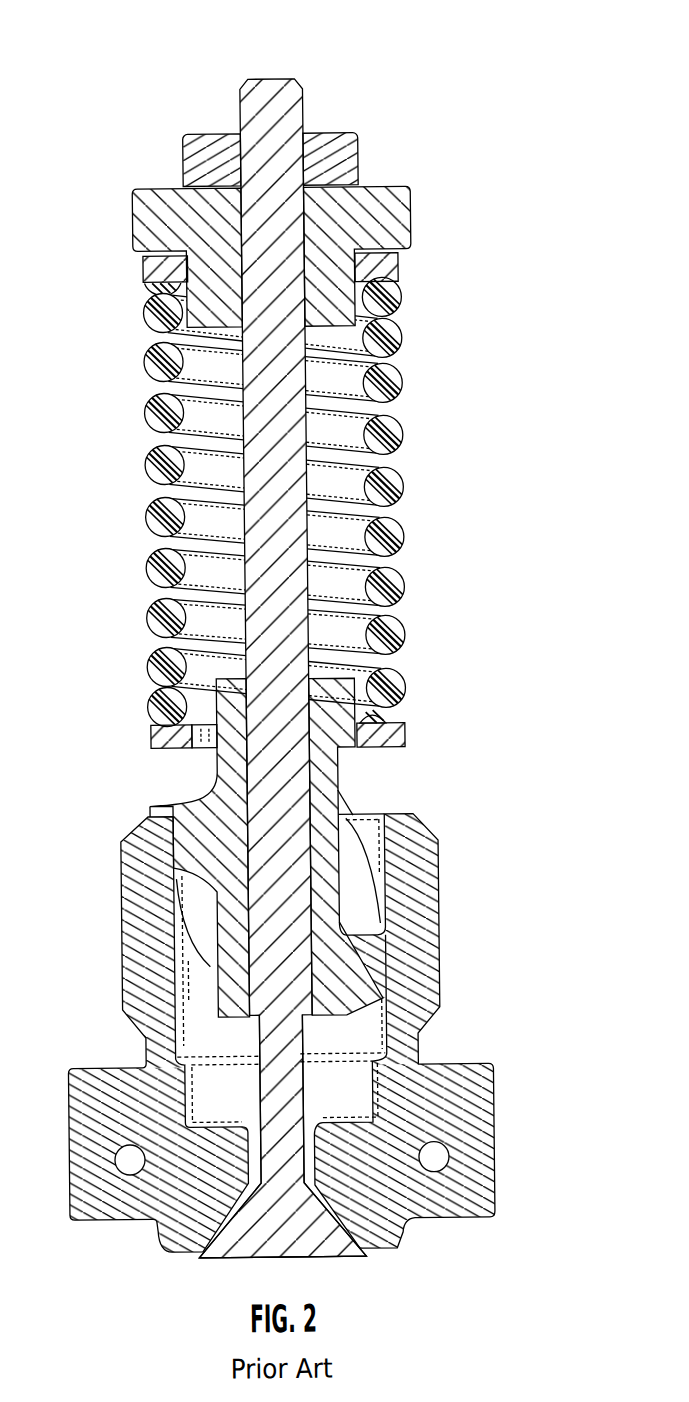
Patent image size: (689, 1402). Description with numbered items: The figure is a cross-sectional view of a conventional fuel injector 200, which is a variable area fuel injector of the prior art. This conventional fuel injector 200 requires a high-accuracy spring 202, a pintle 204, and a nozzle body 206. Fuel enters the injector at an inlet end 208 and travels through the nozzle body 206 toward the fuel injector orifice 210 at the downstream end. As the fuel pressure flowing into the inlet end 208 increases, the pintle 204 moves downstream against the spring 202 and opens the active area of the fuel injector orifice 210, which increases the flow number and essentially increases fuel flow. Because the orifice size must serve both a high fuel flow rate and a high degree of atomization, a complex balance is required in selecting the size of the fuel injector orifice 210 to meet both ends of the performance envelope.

The conventional fuel injector 200 is at (298, 660).
The spring 202 is at (405, 538).
The pintle 204 is at (300, 1260).
The nozzle body 206 is at (434, 927).
The inlet end 208 is at (217, 66).
The fuel injector orifice 210 is at (190, 1261).